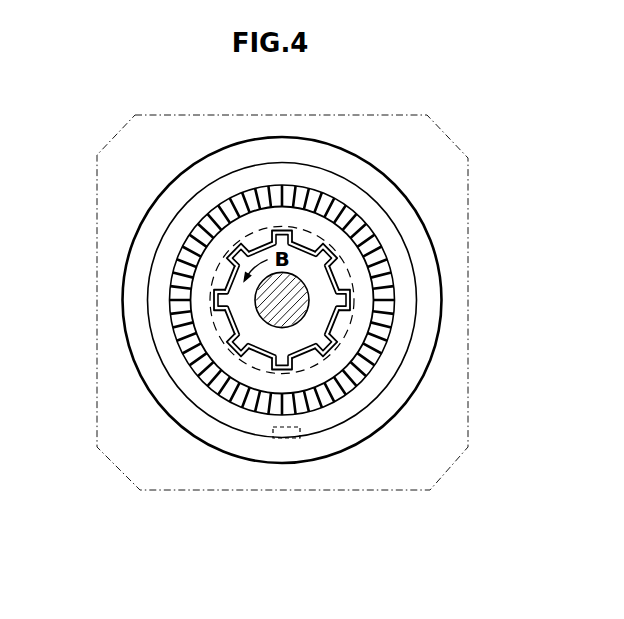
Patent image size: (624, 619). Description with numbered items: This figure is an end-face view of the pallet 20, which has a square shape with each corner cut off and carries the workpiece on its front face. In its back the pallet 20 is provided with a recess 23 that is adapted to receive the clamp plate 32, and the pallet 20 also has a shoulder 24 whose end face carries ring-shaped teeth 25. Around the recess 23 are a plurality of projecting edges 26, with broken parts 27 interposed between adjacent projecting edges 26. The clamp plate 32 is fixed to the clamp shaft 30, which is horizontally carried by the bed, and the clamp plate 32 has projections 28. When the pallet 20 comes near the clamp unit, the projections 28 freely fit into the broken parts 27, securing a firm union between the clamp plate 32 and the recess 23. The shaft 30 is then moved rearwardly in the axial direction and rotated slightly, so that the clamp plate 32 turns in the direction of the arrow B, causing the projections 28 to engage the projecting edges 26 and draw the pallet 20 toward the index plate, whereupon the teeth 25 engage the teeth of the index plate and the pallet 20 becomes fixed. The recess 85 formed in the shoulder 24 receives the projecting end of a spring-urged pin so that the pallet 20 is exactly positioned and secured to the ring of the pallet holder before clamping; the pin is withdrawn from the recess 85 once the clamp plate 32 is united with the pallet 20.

The pallet 20 is at (470, 176).
The recess 23 is at (366, 195).
The shoulder 24 is at (417, 277).
The ring-shaped teeth 25 is at (393, 326).
The projecting edges 26 is at (255, 238).
The broken parts 27 is at (217, 268).
The projections 28 is at (230, 248).
The shaft 30 is at (290, 318).
The clamp plate 32 is at (262, 343).
The recess 85 is at (296, 438).